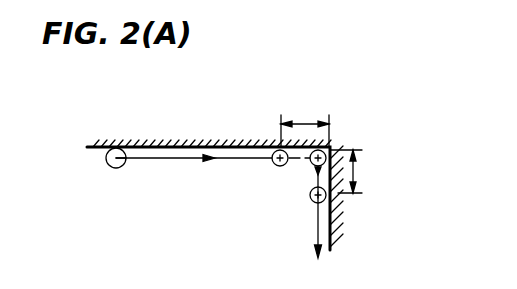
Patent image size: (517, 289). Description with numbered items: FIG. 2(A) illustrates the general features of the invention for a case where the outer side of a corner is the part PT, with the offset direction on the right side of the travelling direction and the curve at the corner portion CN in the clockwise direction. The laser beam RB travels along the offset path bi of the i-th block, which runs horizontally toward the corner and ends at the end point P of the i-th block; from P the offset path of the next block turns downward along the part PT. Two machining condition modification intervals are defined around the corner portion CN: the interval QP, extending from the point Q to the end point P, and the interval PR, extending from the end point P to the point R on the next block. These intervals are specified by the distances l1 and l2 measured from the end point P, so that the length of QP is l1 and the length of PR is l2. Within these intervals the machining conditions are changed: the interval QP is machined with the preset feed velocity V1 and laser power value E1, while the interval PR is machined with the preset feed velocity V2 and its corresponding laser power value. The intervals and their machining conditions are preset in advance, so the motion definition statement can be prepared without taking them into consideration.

The corner portion CN is at (340, 139).
The offset path of the i-th block bi is at (195, 163).
The laser beam RB is at (111, 168).
The point Q is at (275, 166).
The end point of the i-th block P is at (312, 166).
The point R is at (310, 200).
The part PT is at (338, 229).
The length of machining condition modification interval QP l1 is at (305, 125).
The length of machining condition modification interval PR l2 is at (352, 171).
The feed velocity V1 is at (310, 49).
The laser power value E1 is at (309, 74).
The feed velocity V2 is at (421, 178).